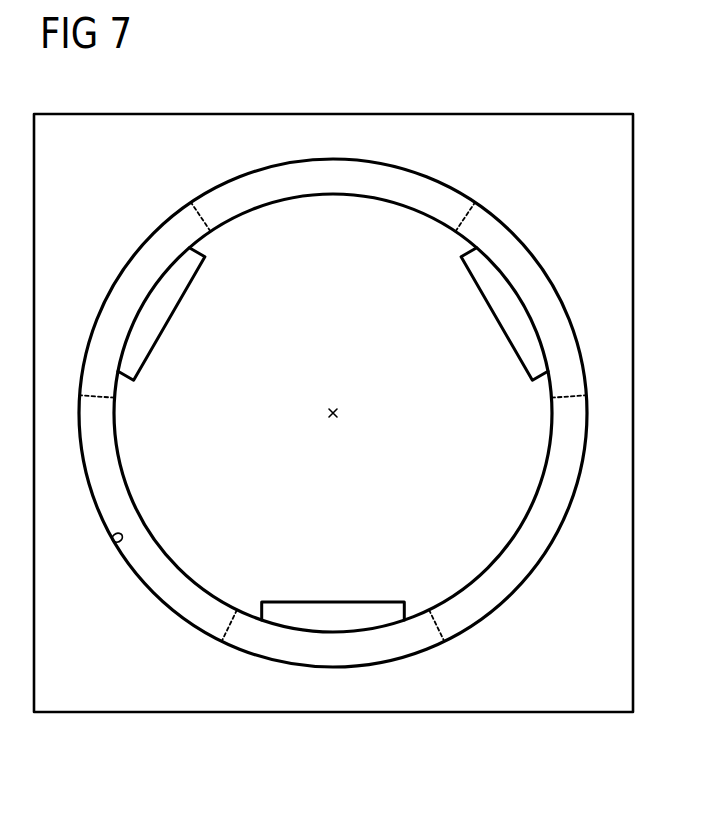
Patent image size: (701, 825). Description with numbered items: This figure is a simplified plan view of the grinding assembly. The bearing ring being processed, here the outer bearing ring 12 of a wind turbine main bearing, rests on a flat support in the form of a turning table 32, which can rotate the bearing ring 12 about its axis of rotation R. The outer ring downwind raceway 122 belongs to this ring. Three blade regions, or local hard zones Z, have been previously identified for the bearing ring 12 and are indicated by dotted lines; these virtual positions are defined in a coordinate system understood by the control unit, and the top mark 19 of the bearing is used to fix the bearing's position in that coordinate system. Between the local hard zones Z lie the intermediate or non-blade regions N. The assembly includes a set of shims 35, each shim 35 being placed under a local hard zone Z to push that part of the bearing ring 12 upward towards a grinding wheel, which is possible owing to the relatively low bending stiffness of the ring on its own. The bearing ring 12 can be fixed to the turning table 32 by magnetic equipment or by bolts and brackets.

The outer bearing ring 12 is at (226, 178).
The outer ring downwind raceway 122 is at (410, 185).
The turning table 32 is at (557, 127).
The shim 35 is at (155, 315).
The top mark 19 is at (113, 542).
The axis of rotation R is at (336, 413).
The non-blade region N is at (338, 173).
The local hard zone Z is at (133, 282).